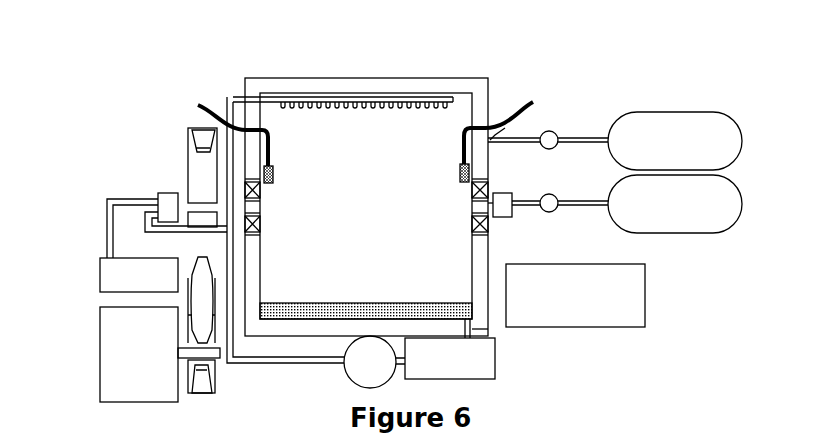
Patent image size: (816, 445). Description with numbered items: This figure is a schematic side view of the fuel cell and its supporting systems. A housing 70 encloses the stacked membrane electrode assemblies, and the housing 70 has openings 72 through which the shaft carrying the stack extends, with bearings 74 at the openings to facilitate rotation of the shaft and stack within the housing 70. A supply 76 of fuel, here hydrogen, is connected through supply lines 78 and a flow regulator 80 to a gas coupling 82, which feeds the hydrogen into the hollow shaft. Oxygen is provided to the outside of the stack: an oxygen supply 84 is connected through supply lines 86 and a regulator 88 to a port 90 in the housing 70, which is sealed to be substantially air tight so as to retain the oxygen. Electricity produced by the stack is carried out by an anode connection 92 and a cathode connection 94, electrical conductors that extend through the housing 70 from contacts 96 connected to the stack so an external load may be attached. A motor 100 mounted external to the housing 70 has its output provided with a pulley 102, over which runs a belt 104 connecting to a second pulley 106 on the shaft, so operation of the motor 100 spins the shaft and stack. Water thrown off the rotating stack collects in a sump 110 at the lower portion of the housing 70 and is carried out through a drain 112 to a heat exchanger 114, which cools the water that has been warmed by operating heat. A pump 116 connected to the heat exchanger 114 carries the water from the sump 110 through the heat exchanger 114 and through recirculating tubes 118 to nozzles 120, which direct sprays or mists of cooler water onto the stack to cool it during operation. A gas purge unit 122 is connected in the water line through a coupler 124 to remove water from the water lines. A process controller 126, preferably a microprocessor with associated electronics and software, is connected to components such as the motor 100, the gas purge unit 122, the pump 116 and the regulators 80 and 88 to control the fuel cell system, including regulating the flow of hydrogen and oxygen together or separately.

The housing 70 is at (475, 77).
The openings 72 is at (262, 206).
The bearings 74 is at (262, 225).
The supply of fuel 76 is at (720, 217).
The supply lines 78 is at (587, 210).
The flow regulator 80 is at (549, 212).
The gas coupling 82 is at (512, 196).
The oxygen supply 84 is at (708, 118).
The supply lines 86 is at (577, 140).
The regulator 88 is at (555, 131).
The port 90 is at (533, 102).
The anode connection 92 is at (500, 130).
The cathode connection 94 is at (200, 105).
The contacts 96 is at (273, 177).
The motor 100 is at (100, 352).
The pulley 102 is at (217, 365).
The belt 104 is at (197, 297).
The second pulley 106 is at (192, 170).
The sump 110 is at (362, 277).
The drain 112 is at (483, 330).
The heat exchanger 114 is at (477, 379).
The pump 116 is at (355, 373).
The recirculating tubes 118 is at (265, 367).
The nozzles 120 is at (363, 107).
The gas purge unit 122 is at (100, 273).
The coupler 124 is at (165, 193).
The process controller 126 is at (623, 329).